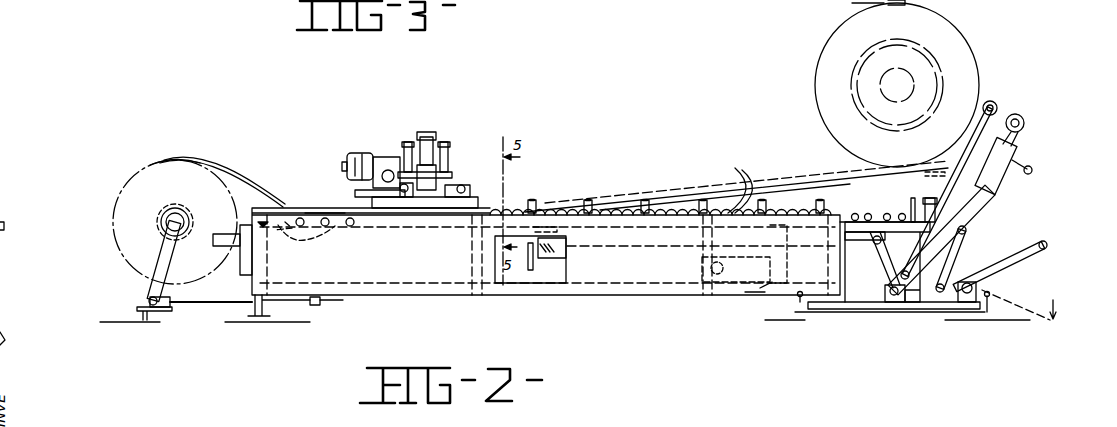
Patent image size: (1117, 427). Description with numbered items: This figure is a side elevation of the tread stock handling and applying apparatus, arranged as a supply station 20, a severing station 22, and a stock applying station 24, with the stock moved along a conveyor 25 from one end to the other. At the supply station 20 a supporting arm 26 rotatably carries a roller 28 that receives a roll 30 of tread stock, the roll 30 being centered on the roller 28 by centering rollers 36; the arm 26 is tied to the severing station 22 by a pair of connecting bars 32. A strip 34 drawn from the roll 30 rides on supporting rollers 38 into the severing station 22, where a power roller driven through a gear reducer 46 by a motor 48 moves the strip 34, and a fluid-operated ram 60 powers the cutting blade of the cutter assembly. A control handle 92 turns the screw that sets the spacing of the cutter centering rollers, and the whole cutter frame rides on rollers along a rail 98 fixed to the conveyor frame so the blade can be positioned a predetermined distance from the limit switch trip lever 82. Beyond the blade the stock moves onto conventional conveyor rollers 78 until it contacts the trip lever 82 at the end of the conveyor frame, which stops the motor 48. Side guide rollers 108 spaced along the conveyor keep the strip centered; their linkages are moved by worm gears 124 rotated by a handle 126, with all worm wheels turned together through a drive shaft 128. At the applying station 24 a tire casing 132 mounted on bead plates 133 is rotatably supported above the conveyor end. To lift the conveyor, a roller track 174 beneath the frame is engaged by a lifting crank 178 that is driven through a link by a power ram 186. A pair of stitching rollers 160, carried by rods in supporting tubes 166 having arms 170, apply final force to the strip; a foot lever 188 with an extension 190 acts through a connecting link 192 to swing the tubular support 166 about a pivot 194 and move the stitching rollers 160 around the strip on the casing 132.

The supply station 20 is at (168, 150).
The severing station 22 is at (362, 142).
The stock applying station 24 is at (825, 158).
The conveyor 25 is at (617, 179).
The supporting arm 26 is at (145, 262).
The roller 28 is at (160, 222).
The roll of tread stock 30 is at (109, 203).
The connecting bars 32 is at (192, 302).
The strip 34 is at (258, 200).
The centering rollers 36 is at (226, 238).
The supporting rollers 38 is at (325, 236).
The gear reducer 46 is at (400, 163).
The motor 48 is at (356, 190).
The fluid-operated ram 60 is at (459, 156).
The conveyor rollers 78 is at (742, 186).
The limit switch trip lever 82 is at (914, 204).
The control handle 92 is at (410, 190).
The rail 98 is at (334, 212).
The side guide rollers 108 is at (690, 208).
The worm gears 124 is at (534, 255).
The handle 126 is at (528, 283).
The drive shaft 128 is at (562, 252).
The tire casing 132 is at (815, 50).
The bead plates 133 is at (852, 82).
The stitching rollers 160 is at (1023, 118).
The supporting tubes 166 is at (992, 188).
The arms 170 is at (1022, 163).
The roller track 174 is at (866, 262).
The lifting crank 178 is at (878, 243).
The power ram 186 is at (760, 295).
The foot lever 188 is at (1042, 262).
The extension 190 is at (965, 300).
The connecting link 192 is at (963, 250).
The pivot 194 is at (886, 290).